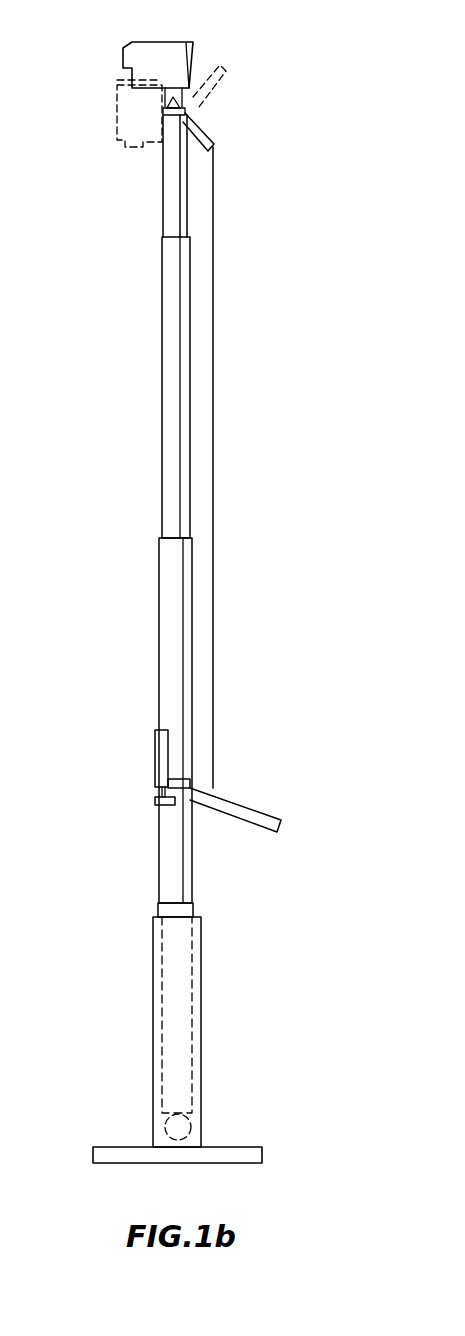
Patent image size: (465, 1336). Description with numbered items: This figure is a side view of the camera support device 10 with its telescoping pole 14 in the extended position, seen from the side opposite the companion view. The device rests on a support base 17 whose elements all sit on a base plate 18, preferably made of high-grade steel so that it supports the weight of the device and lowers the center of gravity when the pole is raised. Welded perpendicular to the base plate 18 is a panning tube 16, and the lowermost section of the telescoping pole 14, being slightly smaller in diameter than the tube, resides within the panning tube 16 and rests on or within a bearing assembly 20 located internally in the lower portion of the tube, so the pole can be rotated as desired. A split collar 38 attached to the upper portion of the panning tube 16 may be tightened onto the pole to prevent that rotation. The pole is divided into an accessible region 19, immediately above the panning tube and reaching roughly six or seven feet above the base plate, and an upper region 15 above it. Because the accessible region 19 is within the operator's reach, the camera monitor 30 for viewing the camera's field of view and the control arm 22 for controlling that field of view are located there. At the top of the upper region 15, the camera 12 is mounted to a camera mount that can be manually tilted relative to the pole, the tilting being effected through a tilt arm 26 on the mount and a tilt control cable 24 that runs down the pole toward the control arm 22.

The camera support device 10 is at (118, 292).
The camera 12 is at (178, 42).
The telescoping pole 14 is at (160, 580).
The upper region 15 is at (302, 232).
The panning tube 16 is at (202, 1003).
The support base 17 is at (333, 1162).
The base plate 18 is at (217, 1147).
The accessible region 19 is at (333, 903).
The bearing assembly 20 is at (163, 1122).
The control arm 22 is at (240, 800).
The tilt control cable 24 is at (213, 408).
The tilt arm 26 is at (207, 123).
The camera monitor 30 is at (148, 772).
The split collar 38 is at (188, 910).